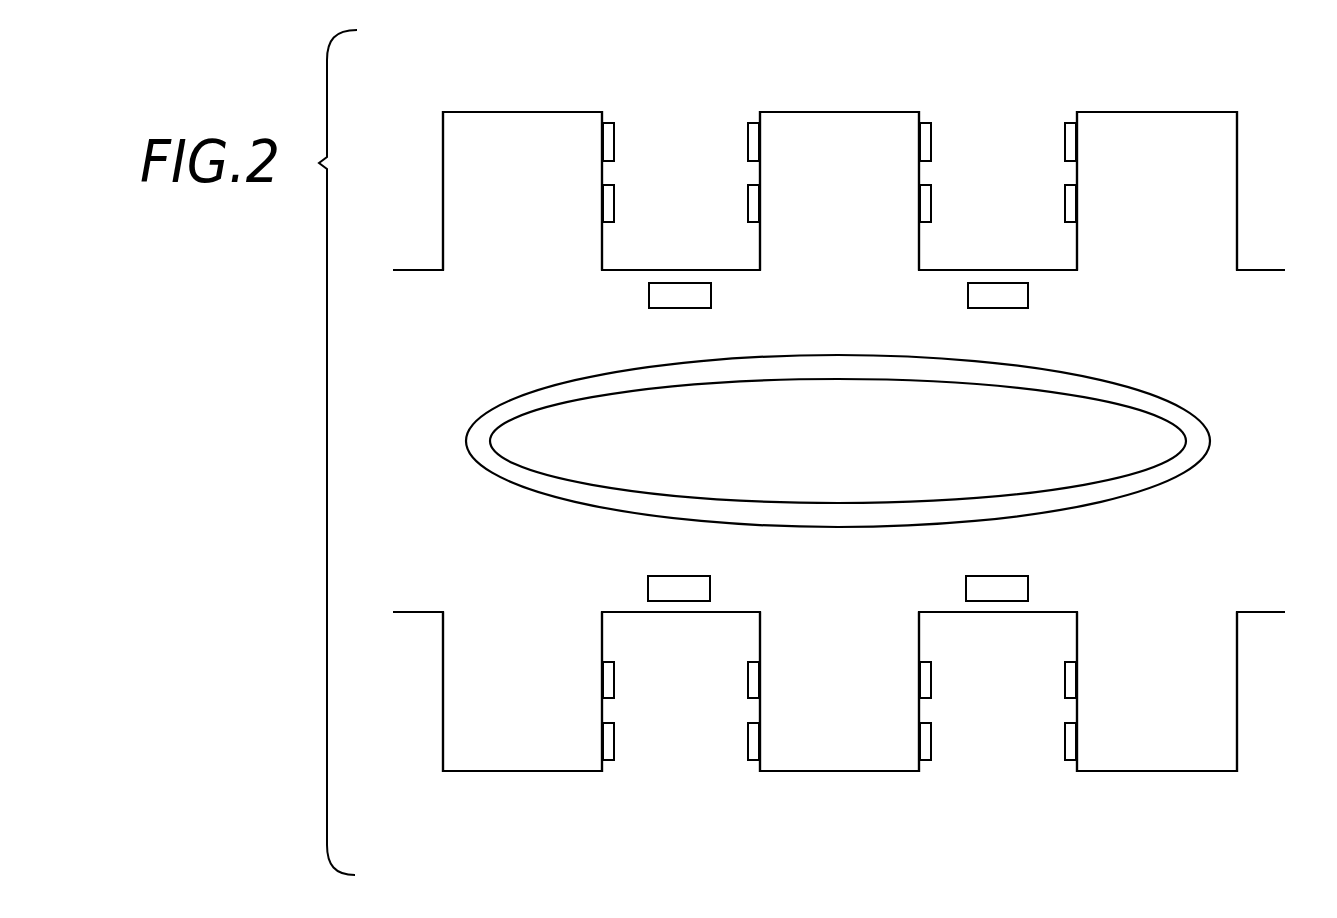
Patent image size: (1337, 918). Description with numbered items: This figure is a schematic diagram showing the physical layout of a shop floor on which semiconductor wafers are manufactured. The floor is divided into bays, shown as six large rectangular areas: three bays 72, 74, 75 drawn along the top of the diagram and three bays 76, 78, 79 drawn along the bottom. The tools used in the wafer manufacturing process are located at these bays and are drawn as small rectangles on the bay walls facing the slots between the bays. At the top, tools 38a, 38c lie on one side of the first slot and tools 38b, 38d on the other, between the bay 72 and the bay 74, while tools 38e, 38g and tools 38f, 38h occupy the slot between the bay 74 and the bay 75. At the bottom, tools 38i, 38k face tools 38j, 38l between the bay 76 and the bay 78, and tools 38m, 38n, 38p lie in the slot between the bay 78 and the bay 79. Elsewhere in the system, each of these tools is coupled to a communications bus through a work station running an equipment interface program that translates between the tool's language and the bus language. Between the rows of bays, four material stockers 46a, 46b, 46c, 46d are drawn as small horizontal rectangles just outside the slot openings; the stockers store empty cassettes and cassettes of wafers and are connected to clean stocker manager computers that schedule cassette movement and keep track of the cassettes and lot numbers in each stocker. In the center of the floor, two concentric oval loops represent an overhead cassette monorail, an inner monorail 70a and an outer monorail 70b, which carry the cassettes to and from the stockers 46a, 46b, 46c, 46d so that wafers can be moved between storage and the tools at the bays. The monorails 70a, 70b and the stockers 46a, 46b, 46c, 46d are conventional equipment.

The tool 38a is at (604, 123).
The tool 38b is at (748, 128).
The tool 38c is at (614, 214).
The tool 38d is at (748, 210).
The tool 38e is at (955, 97).
The tool 38f is at (1065, 124).
The tool 38g is at (931, 212).
The tool 38h is at (1065, 210).
The tool 38i is at (614, 668).
The tool 38j is at (748, 690).
The tool 38k is at (614, 745).
The tool 38l is at (750, 762).
The tool 38m is at (931, 668).
The tool 38n is at (1065, 690).
The tool 38p is at (1070, 762).
The material stocker 46a is at (649, 295).
The material stocker 46b is at (1013, 309).
The material stocker 46c is at (648, 597).
The material stocker 46d is at (1028, 598).
The monorail 70a is at (1173, 462).
The monorail 70b is at (1200, 418).
The bay 72 is at (536, 219).
The bay 74 is at (852, 220).
The bay 75 is at (1173, 218).
The bay 76 is at (535, 720).
The bay 78 is at (852, 722).
The bay 79 is at (1180, 722).